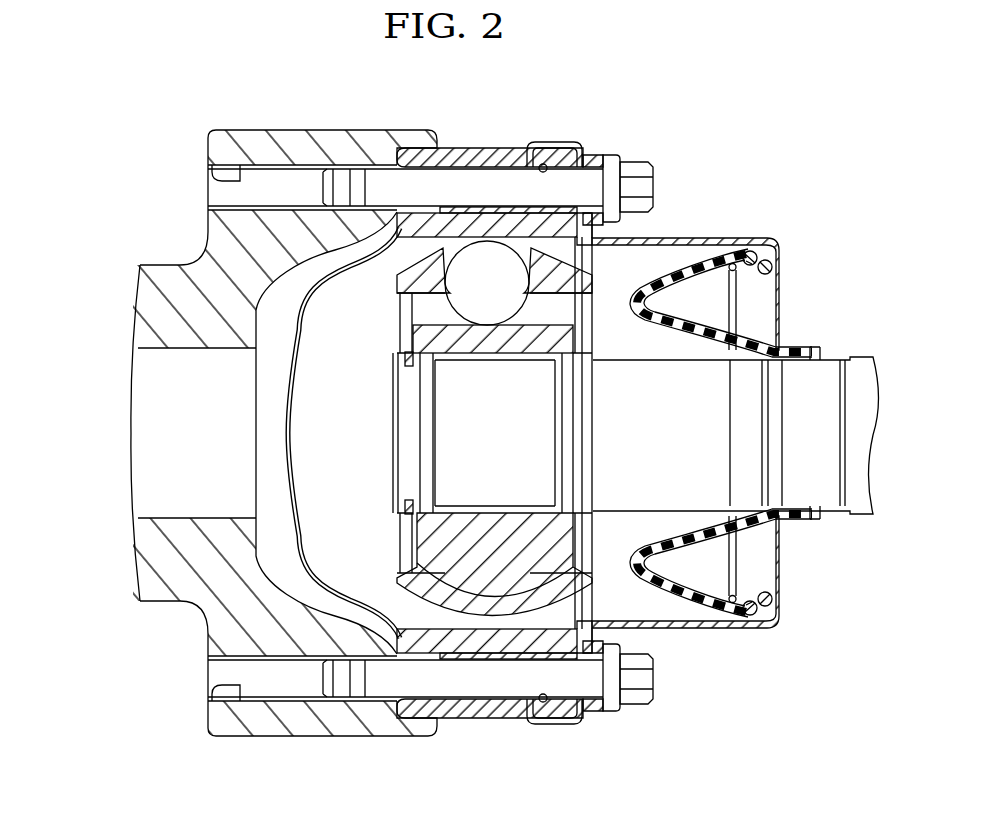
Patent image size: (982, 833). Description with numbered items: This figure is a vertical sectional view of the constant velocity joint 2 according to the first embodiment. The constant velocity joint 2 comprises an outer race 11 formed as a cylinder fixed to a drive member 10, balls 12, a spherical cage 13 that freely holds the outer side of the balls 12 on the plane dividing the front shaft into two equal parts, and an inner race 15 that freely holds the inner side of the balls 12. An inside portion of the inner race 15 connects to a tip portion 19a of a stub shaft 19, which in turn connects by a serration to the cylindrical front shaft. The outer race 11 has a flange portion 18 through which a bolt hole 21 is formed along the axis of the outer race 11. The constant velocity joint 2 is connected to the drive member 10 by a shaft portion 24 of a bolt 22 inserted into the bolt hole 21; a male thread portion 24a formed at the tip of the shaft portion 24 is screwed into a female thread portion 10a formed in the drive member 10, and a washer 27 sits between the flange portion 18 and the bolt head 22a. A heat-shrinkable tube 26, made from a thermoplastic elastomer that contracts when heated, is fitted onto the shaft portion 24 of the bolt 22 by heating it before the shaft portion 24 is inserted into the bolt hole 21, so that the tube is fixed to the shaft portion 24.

The constant velocity joint 2 is at (765, 226).
The drive member 10 is at (260, 146).
The female thread portion 10a is at (212, 174).
The outer race 11 is at (503, 222).
The balls 12 is at (485, 272).
The spherical cage 13 is at (430, 267).
The inner race 15 is at (487, 567).
The flange portion 18 is at (455, 152).
The stub shaft 19 is at (828, 372).
The tip portion 19a is at (538, 408).
The bolt hole 21 is at (543, 163).
The bolt 22 is at (562, 157).
The bolt head 22a is at (637, 167).
The shaft portion 24 is at (338, 177).
The male thread portion 24a is at (383, 178).
The heat-shrinkable tube 26 is at (466, 160).
The washer 27 is at (590, 153).